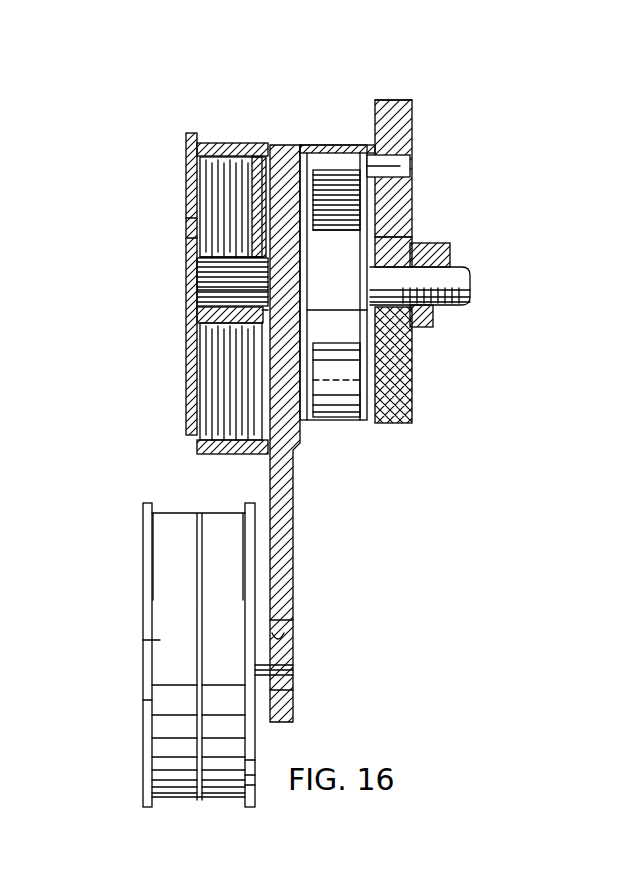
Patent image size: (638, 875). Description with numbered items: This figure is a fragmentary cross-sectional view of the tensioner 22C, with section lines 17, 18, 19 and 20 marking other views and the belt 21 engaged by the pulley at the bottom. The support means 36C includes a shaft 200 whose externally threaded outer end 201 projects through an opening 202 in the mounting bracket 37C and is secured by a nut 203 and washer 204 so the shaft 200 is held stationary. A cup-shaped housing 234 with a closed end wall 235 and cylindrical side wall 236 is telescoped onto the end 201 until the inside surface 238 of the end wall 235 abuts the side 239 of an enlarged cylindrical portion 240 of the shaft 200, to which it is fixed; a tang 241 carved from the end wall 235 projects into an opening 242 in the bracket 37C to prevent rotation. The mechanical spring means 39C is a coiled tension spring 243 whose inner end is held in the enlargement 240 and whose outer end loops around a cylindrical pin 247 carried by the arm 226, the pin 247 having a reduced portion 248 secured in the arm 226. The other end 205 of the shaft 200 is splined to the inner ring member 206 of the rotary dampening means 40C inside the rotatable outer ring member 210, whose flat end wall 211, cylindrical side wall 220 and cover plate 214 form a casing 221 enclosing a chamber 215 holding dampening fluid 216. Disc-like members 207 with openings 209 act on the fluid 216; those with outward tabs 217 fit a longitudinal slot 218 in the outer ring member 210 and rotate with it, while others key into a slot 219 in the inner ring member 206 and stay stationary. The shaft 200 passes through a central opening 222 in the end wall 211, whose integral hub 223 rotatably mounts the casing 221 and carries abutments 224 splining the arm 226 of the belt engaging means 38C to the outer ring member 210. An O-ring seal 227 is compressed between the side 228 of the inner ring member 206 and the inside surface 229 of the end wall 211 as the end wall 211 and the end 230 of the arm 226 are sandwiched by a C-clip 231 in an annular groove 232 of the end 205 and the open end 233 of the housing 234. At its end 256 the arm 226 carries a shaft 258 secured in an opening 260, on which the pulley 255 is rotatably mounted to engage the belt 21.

The section line 17- 17 is at (450, 75).
The section line 18- 18 is at (336, 92).
The section line 19- 19 is at (313, 205).
The section line 20- 20 is at (158, 118).
The belt 21 is at (190, 140).
The disc-like member 207 is at (197, 160).
The openings 209 is at (198, 186).
The tensioner 22C is at (152, 205).
The chamber 215 is at (195, 218).
The longitudinal slot 219 is at (197, 238).
The other end of shaft 205 is at (197, 265).
The annular groove 232 is at (205, 283).
The C-clip 231 is at (200, 290).
The inner ring member 206 is at (197, 318).
The rotary dampening means 40C is at (192, 335).
The side of inner ring member 228 is at (265, 330).
The dampening fluid 216 is at (200, 362).
The end cap or plate 214 is at (262, 370).
The inside surface of end wall 229 is at (262, 385).
The longitudinal slot 218 is at (197, 412).
The casing 221 is at (212, 143).
The side wall means 220 is at (220, 143).
The open end of housing 233 is at (290, 143).
The end of arm 230 is at (282, 143).
The end wall 211 is at (258, 157).
The side wall means of housing 236 is at (362, 150).
The cup-shaped housing 234 is at (367, 143).
The coiled tension spring 243 is at (380, 110).
The mounting bracket 37C is at (406, 118).
The opening in mounting bracket 242 is at (392, 165).
The tang 241 is at (395, 177).
The mechanical spring means 39C is at (395, 200).
The end wall of housing 235 is at (375, 230).
The support means 36C is at (395, 245).
The outer end of shaft 201 is at (432, 262).
The hub portion 223 is at (375, 232).
The central opening 222 is at (372, 258).
The abutments 224 is at (372, 300).
The O-ring seal member 227 is at (262, 318).
The nut 203 is at (422, 322).
The washer 204 is at (412, 335).
The opening in mounting bracket 202 is at (405, 345).
The side of enlarged cylindrical portion 239 is at (400, 360).
The inside surface of end wall 238 is at (390, 425).
The enlarged cylindrical portion 240 is at (325, 415).
The cylindrical pin 247 is at (322, 428).
The reduced portion of pin 248 is at (310, 430).
The shaft 200 is at (288, 300).
The outer ring member 210 is at (262, 462).
The outwardly directed tab 217 is at (256, 456).
The arm 226 is at (292, 549).
The shaft 258 is at (276, 624).
The opening 260 is at (290, 648).
The end of arm 256 is at (293, 707).
The pulley 255 is at (165, 647).
The belt engaging means 38C is at (178, 497).